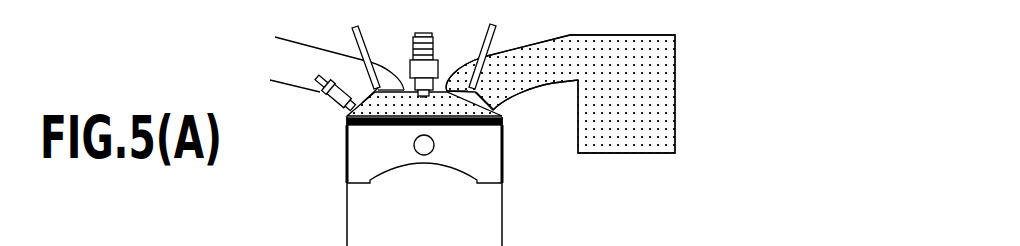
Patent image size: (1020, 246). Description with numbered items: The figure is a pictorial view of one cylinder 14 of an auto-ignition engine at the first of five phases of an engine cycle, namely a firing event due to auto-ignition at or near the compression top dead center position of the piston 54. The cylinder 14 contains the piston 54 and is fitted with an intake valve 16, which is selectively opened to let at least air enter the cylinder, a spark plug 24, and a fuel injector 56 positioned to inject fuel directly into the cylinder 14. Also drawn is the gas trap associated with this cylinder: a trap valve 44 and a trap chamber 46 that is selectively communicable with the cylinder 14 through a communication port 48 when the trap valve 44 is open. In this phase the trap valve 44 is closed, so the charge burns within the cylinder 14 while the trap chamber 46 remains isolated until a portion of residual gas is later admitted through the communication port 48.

The cylinder 14 is at (346, 160).
The intake valve 16 is at (352, 42).
The spark plug 24 is at (410, 67).
The trap valve 44 is at (481, 56).
The trap chamber 46 is at (672, 97).
The communication port 48 is at (544, 84).
The piston 54 is at (494, 172).
The fuel injector 56 is at (322, 106).